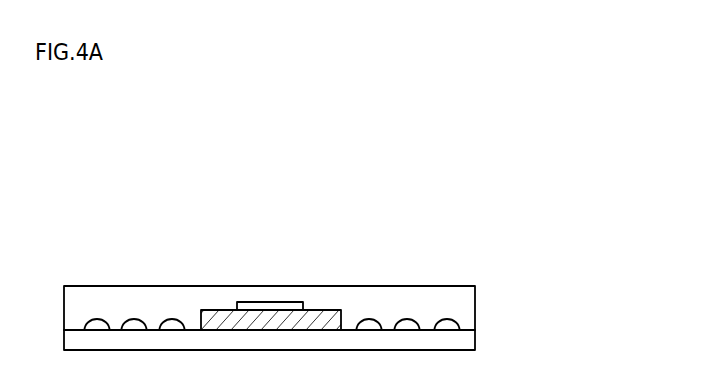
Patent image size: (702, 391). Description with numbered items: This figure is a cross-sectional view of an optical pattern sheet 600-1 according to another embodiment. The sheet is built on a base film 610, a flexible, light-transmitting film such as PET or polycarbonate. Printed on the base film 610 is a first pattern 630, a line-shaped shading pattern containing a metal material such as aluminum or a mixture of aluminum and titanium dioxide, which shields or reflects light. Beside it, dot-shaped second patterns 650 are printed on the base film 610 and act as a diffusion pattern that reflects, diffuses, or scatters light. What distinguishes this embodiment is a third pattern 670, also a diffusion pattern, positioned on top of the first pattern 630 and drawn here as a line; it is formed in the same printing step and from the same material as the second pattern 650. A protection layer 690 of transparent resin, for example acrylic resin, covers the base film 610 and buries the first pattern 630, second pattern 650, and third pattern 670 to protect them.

The optical pattern sheet 600-1 is at (237, 134).
The base film 610 is at (470, 341).
The first pattern 630 is at (315, 313).
The second pattern 650 is at (452, 323).
The third pattern 670 is at (260, 302).
The protection layer 690 is at (390, 310).